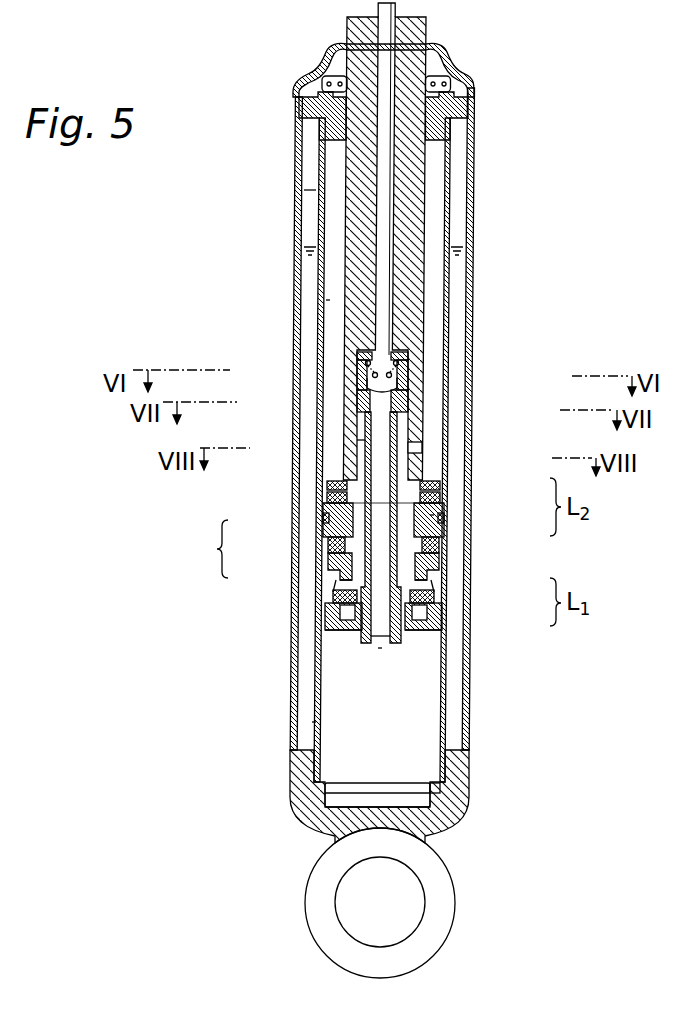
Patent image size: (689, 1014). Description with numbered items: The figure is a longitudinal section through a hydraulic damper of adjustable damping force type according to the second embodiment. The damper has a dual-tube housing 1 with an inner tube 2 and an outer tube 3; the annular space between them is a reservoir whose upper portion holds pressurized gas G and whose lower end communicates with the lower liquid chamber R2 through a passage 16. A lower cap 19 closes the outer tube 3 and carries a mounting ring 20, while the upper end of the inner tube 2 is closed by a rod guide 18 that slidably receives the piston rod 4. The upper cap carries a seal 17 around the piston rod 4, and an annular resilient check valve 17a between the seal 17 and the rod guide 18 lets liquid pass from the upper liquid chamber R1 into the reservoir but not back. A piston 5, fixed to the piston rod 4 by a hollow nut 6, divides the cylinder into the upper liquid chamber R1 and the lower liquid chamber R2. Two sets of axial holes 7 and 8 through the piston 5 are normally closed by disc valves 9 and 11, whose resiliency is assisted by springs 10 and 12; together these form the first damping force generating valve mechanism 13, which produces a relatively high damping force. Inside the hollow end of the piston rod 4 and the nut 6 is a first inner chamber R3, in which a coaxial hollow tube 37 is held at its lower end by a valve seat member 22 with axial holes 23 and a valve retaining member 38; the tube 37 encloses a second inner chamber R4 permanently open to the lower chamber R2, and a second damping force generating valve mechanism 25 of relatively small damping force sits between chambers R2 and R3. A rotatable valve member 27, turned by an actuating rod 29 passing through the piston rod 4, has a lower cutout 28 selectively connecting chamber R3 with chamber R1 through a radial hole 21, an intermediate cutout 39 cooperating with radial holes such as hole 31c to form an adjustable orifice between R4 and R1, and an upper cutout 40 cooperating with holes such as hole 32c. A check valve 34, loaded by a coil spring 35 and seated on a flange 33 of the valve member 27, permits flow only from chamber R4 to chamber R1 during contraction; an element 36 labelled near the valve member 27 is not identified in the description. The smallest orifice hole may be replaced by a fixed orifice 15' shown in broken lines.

The dual-tube housing 1 is at (293, 225).
The inner tube 2 is at (455, 198).
The outer tube 3 is at (470, 231).
The piston rod 4 is at (412, 272).
The piston 5 is at (445, 515).
The hollow nut 6 is at (330, 618).
The axially extending holes 7 is at (428, 592).
The axially extending holes 8 is at (428, 543).
The damping force generating disc valve 9 is at (343, 525).
The spring 10 is at (330, 488).
The damping force generating disc valve 11 is at (328, 549).
The spring 12 is at (335, 575).
The first damping force generating valve mechanism 13 is at (206, 549).
The fixed orifice 15' is at (480, 557).
The passage 16 is at (468, 818).
The seal 17 is at (333, 51).
The annular resilient check valve 17a is at (323, 80).
The rod guide 18 is at (306, 105).
The lower cap 19 is at (312, 818).
The mounting ring 20 is at (445, 878).
The radial hole 21 is at (410, 447).
The valve seat member 22 is at (398, 630).
The axial holes 23 is at (410, 642).
The second damping force generating valve mechanism 25 is at (408, 608).
The valve member 27 is at (362, 362).
The cutout 28 is at (400, 412).
The actuating rod 29 is at (384, 277).
The radial hole 31c is at (400, 388).
The radial hole 32c is at (408, 365).
The radially inwardly extending flange 33 is at (365, 392).
The check valve 34 is at (370, 420).
The coil spring 35 is at (352, 372).
The valve 36 is at (362, 352).
The hollow tube 37 is at (372, 455).
The valve retaining member 38 is at (397, 648).
The cutout 39 is at (410, 380).
The cutout 40 is at (402, 357).
The pressurized gas G is at (312, 182).
The upper liquid chamber R1 is at (326, 301).
The lower liquid chamber R2 is at (312, 722).
The first inner chamber R3 is at (432, 515).
The second inner chamber R4 is at (380, 648).